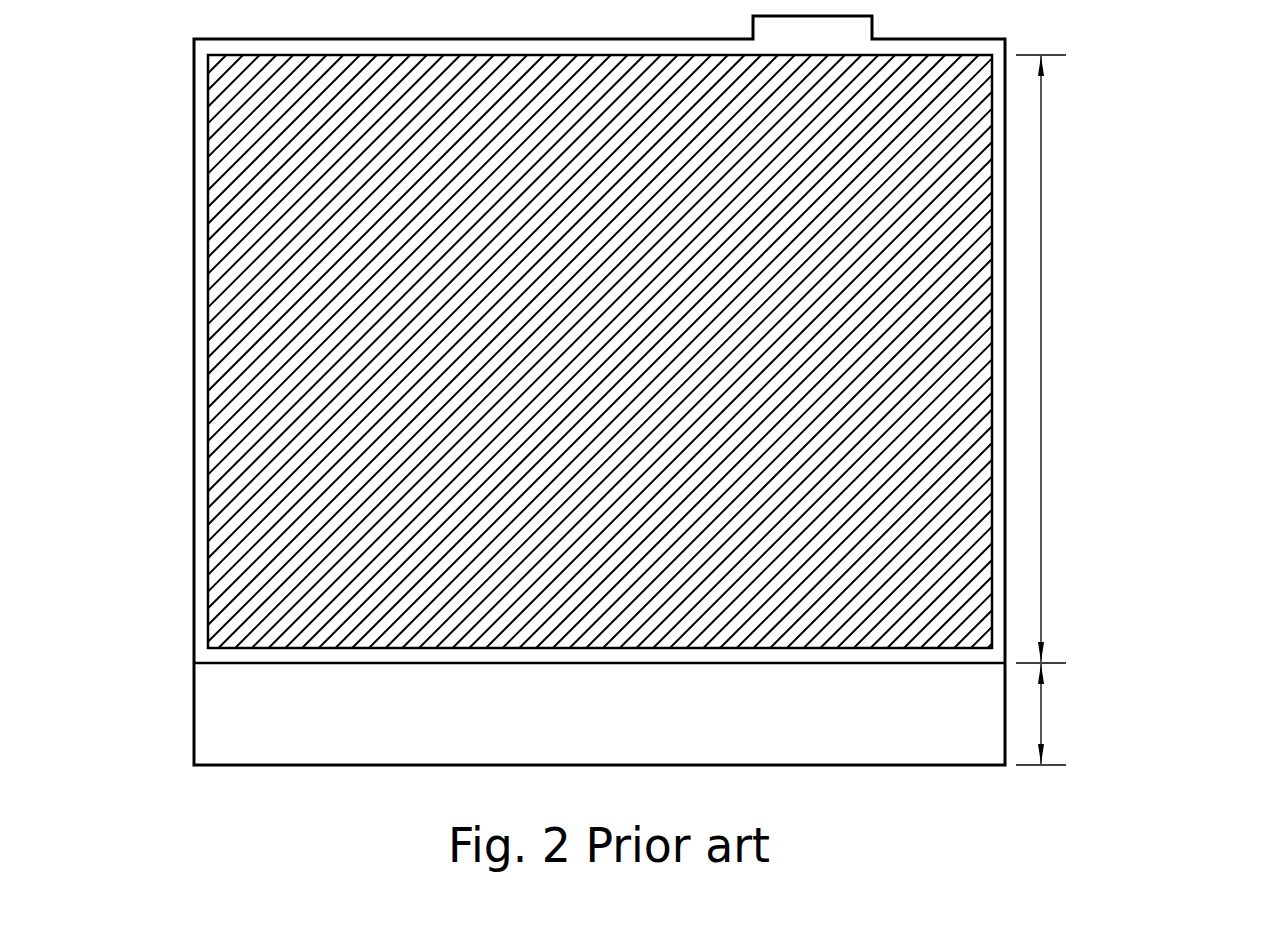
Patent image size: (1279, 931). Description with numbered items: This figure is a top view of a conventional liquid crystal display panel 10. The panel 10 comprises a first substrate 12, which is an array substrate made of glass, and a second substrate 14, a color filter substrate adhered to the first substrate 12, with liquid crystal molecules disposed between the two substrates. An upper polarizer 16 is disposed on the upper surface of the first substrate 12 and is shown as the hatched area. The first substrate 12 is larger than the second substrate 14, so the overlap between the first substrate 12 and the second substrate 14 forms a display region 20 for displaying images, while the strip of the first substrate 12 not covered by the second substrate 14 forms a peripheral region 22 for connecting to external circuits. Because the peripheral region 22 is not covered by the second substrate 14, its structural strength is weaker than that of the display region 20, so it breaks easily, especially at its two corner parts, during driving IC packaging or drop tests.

The liquid crystal display panel 10 is at (668, 390).
The first substrate 12 is at (223, 723).
The second substrate 14 is at (203, 254).
The upper polarizer 16 is at (238, 126).
The display region 20 is at (1053, 359).
The peripheral region 22 is at (1053, 714).